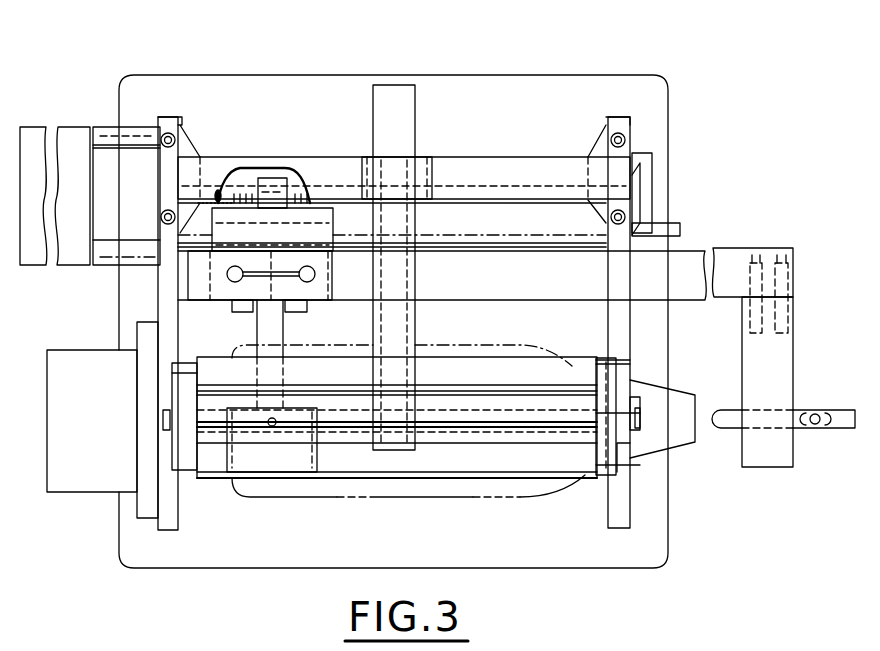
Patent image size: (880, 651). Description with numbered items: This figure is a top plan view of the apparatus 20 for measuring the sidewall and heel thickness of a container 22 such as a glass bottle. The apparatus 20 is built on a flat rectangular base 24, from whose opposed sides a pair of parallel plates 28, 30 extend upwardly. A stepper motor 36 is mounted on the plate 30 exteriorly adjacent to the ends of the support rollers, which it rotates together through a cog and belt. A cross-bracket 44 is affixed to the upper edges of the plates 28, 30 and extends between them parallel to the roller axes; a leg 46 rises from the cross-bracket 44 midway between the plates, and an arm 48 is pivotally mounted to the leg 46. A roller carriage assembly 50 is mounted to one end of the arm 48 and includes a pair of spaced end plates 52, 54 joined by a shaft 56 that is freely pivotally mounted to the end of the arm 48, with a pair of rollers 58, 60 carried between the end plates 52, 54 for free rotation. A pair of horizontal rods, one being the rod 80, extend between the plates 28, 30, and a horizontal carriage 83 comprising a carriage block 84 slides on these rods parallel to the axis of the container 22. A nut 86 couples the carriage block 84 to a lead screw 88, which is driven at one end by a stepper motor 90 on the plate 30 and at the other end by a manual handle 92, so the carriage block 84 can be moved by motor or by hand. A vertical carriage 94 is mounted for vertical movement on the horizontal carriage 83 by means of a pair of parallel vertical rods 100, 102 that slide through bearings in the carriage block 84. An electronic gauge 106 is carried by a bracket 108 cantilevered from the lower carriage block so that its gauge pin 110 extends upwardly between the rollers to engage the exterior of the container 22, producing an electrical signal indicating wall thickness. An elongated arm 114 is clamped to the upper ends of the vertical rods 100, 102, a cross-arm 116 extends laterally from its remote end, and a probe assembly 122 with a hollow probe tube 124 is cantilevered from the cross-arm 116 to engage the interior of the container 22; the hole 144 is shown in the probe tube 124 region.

The apparatus 20 is at (692, 32).
The container 22 is at (437, 498).
The base 24 is at (660, 105).
The plate 28 is at (632, 525).
The plate 30 is at (165, 528).
The stepper motor 36 is at (90, 482).
The cross-bracket 44 is at (497, 159).
The leg 46 is at (422, 160).
The arm 48 is at (406, 333).
The roller carriage assembly 50 is at (635, 355).
The end plate 52 is at (176, 455).
The end plate 54 is at (620, 470).
The shaft 56 is at (553, 420).
The roller 58 is at (580, 353).
The roller 60 is at (497, 468).
The rod 80 is at (553, 238).
The horizontal carriage 83 is at (219, 194).
The carriage block 84 is at (318, 216).
The nut 86 is at (276, 187).
The lead screw 88 is at (249, 190).
The stepper motor 90 is at (33, 132).
The manual handle 92 is at (650, 182).
The vertical carriage 94 is at (190, 308).
The vertical rod 100 is at (218, 268).
The vertical rod 102 is at (362, 274).
The electronic gauge 106 is at (308, 474).
The bracket 108 is at (280, 340).
The gauge pin 110 is at (272, 426).
The elongated arm 114 is at (729, 249).
The cross-arm 116 is at (791, 345).
The probe assembly 122 is at (820, 402).
The probe tube 124 is at (848, 432).
The hole 144 is at (814, 428).